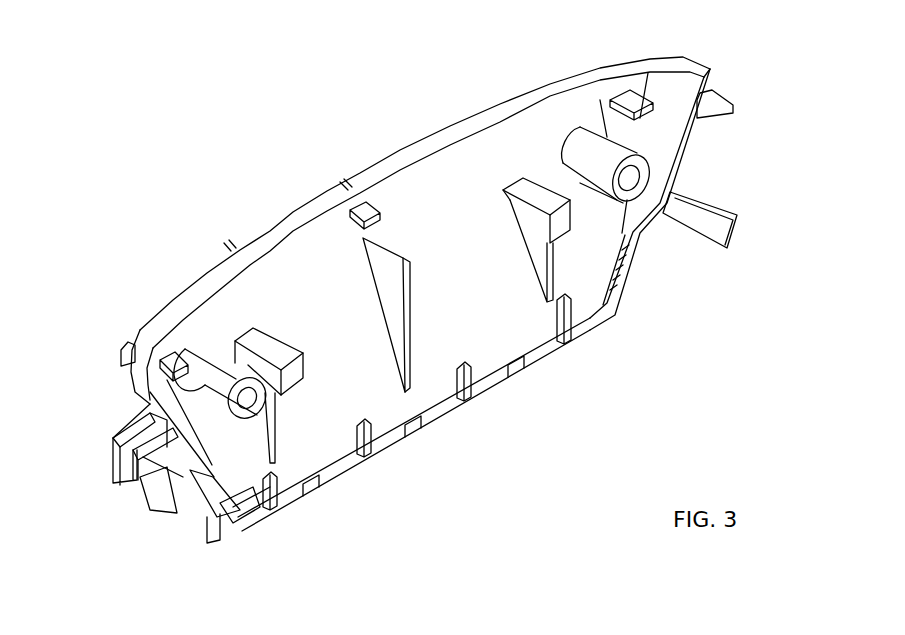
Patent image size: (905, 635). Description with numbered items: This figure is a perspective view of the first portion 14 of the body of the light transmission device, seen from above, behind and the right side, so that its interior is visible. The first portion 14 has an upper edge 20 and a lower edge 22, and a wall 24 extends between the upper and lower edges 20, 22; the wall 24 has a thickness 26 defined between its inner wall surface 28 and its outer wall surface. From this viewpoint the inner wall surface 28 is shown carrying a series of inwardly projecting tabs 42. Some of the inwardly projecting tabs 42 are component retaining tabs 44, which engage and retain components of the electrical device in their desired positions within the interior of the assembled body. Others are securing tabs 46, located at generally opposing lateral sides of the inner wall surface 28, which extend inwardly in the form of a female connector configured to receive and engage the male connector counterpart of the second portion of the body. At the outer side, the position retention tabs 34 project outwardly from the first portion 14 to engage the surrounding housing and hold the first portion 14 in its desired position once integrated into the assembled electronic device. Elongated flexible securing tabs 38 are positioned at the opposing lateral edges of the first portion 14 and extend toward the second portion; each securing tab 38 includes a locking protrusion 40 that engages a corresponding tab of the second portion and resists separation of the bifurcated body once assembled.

The first portion 14 is at (163, 169).
The upper edge 20 is at (550, 83).
The lower edge 22 is at (550, 350).
The wall 24 is at (380, 390).
The thickness 26 is at (685, 162).
The inner wall surface 28 is at (490, 275).
The position retention tabs 34 is at (133, 368).
The securing tabs 38 is at (712, 233).
The locking protrusion 40 is at (733, 218).
The inwardly projecting tabs 42 is at (323, 230).
The component retaining tabs 44 is at (388, 297).
The securing tab 46 is at (601, 142).